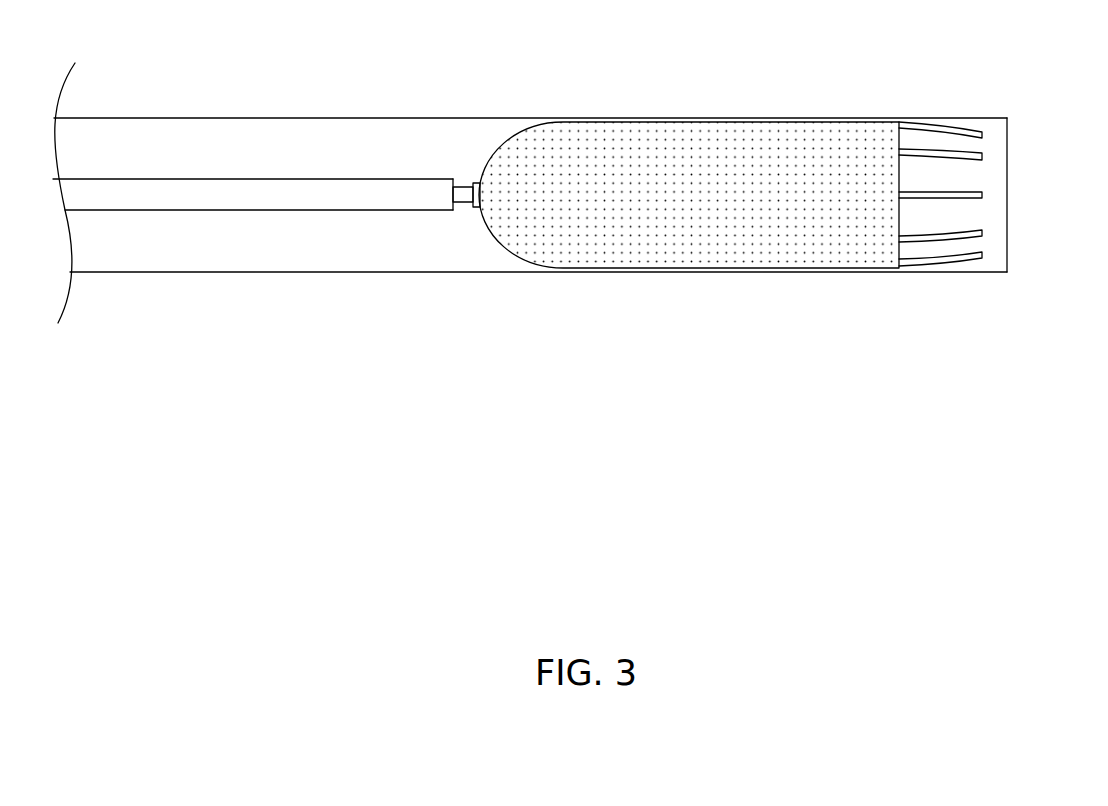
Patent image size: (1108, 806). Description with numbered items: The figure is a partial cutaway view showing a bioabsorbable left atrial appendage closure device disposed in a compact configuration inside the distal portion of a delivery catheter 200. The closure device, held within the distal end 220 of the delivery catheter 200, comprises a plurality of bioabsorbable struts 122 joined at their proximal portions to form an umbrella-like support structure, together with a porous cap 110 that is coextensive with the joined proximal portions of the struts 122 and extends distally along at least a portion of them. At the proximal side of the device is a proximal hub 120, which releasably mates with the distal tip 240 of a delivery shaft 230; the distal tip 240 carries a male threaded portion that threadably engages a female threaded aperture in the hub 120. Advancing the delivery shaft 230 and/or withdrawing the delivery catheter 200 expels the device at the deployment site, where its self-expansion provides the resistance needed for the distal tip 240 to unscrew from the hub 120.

The porous cap 110 is at (700, 140).
The proximal hub 120 is at (473, 182).
The bioabsorbable struts 122 is at (965, 198).
The delivery catheter 200 is at (202, 118).
The distal end of delivery catheter 220 is at (1008, 137).
The delivery shaft 230 is at (277, 179).
The distal tip 240 is at (463, 202).